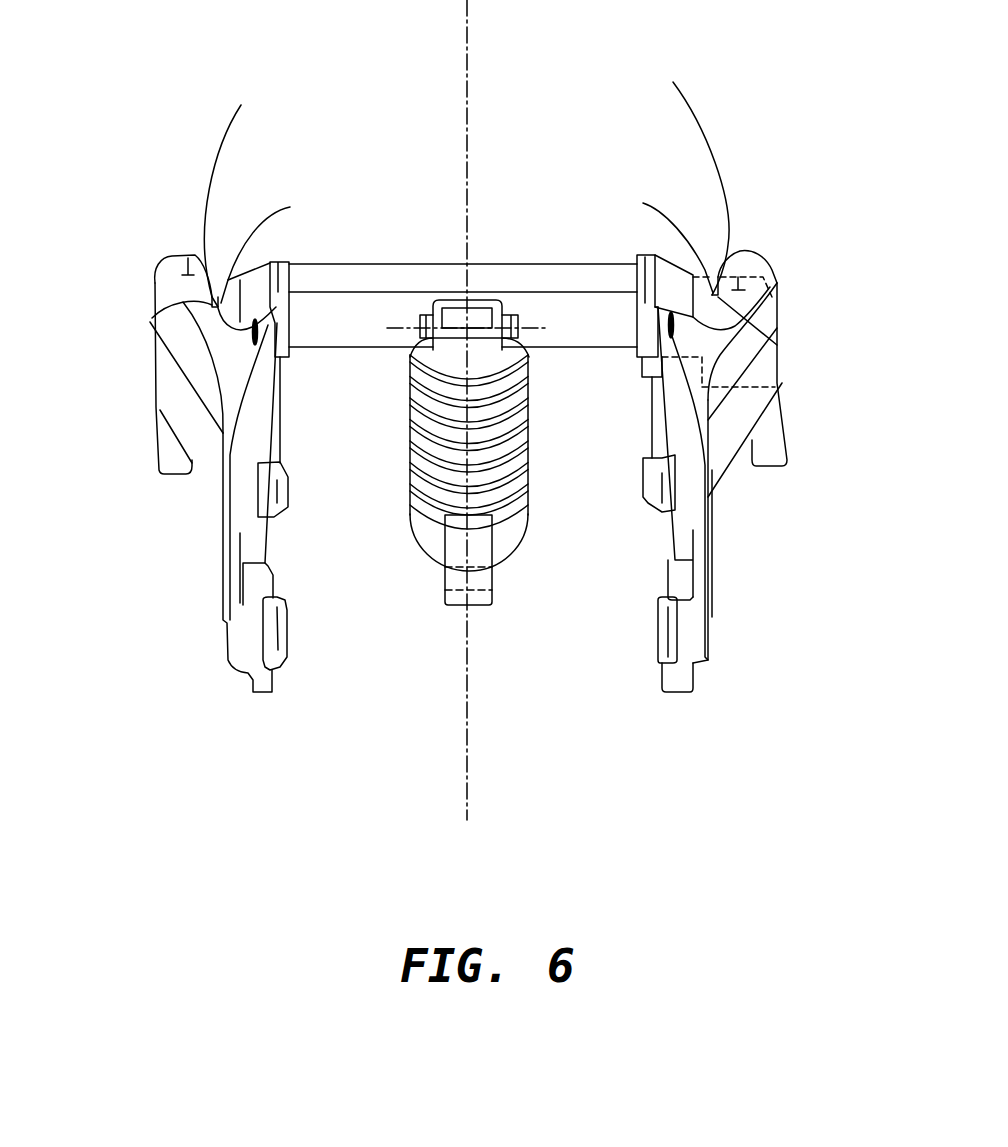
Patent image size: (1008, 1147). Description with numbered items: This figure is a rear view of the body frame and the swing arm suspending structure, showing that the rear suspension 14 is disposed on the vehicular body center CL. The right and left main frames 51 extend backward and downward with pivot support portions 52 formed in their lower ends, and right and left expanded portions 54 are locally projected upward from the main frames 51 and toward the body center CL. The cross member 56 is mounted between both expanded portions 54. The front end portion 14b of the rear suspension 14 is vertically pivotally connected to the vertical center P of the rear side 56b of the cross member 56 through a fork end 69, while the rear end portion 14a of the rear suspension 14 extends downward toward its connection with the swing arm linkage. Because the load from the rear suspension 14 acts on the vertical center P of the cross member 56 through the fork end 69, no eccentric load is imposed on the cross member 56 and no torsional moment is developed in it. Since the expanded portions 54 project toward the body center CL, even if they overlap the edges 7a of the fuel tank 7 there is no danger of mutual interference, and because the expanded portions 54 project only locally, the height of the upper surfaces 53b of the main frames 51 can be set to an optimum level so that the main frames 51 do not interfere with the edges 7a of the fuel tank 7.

The fuel tank 7 is at (706, 126).
The edges of the fuel tank 7a is at (160, 305).
The rear suspension 14 is at (540, 459).
The rear end portion of the rear suspension 14a is at (493, 603).
The front end portion of the rear suspension 14b is at (452, 312).
The main frames 51 is at (177, 343).
The pivot support portions 52 is at (283, 647).
The upper surfaces of the main frames 53b is at (188, 258).
The expanded portions 54 is at (278, 268).
The cross member 56 is at (337, 265).
The rear side of the cross member 56b is at (342, 333).
The fork end 69 is at (485, 303).
The vertical center P is at (407, 327).
The body center CL is at (466, 45).